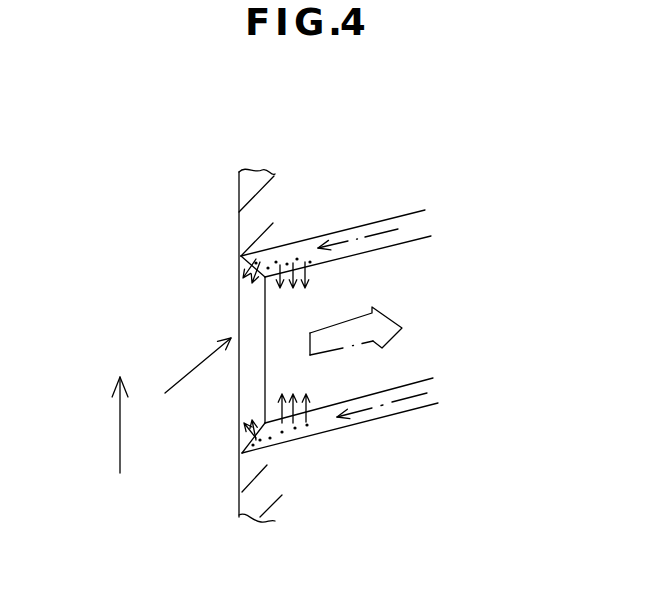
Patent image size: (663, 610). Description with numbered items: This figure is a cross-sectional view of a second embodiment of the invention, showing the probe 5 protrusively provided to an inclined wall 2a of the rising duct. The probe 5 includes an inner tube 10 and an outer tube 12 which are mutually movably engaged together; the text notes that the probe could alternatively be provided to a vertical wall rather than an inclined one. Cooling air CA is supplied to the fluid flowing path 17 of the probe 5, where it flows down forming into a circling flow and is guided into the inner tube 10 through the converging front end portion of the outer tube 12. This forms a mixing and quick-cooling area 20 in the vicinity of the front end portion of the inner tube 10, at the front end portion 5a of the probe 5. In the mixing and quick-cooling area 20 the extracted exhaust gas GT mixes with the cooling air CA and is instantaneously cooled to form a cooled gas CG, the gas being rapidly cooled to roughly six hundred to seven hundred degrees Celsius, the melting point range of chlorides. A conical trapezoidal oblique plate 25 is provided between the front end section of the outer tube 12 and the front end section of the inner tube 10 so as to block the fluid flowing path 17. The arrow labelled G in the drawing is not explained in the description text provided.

The inclined wall 2a is at (237, 185).
The front end portion of the probe 5a is at (238, 262).
The mixing and quick-cooling area 20 is at (287, 355).
The inner tube 10 is at (412, 240).
The outer tube 12 is at (418, 213).
The fluid flowing path 17 is at (368, 231).
The probe 5 is at (333, 433).
The conical trapezoidal oblique plate 25 is at (252, 452).
The cooled gas CG is at (372, 344).
The cooling air CA is at (305, 270).
The extracted exhaust gas GT is at (197, 363).
The gravity direction G is at (120, 423).